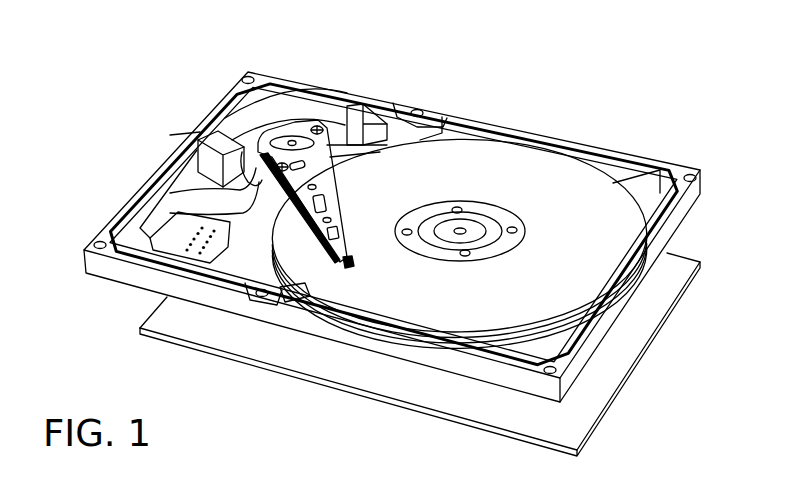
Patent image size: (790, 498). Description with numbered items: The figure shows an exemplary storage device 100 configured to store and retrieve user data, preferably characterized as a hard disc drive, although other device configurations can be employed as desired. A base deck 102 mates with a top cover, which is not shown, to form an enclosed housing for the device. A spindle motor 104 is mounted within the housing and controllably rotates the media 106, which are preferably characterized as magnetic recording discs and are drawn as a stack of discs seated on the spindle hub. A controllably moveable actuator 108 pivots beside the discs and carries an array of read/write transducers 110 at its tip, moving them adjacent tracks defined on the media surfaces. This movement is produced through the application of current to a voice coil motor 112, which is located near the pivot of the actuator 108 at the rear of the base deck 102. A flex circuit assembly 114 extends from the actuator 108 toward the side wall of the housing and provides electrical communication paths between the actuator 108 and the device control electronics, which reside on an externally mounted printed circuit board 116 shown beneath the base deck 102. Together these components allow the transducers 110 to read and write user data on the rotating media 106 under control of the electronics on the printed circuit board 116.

The storage device 100 is at (114, 71).
The base deck 102 is at (623, 312).
The spindle motor 104 is at (470, 226).
The media 106 is at (485, 331).
The actuator 108 is at (346, 213).
The read/write transducers 110 is at (357, 270).
The voice coil motor 112 is at (277, 108).
The flex circuit assembly 114 is at (197, 195).
The printed circuit board 116 is at (543, 449).